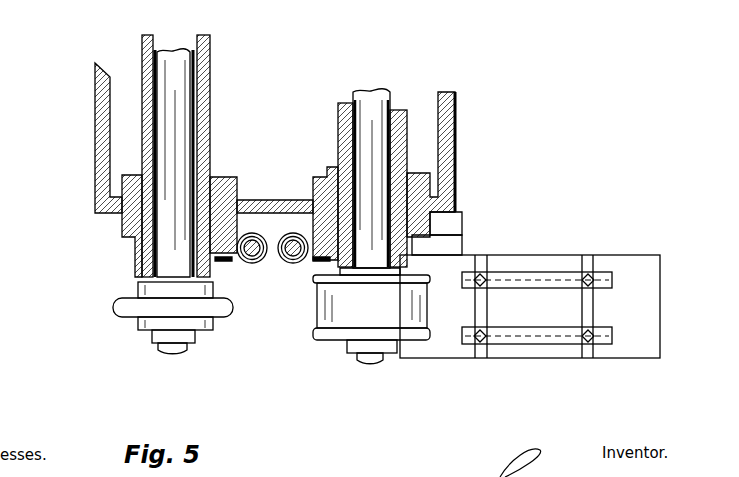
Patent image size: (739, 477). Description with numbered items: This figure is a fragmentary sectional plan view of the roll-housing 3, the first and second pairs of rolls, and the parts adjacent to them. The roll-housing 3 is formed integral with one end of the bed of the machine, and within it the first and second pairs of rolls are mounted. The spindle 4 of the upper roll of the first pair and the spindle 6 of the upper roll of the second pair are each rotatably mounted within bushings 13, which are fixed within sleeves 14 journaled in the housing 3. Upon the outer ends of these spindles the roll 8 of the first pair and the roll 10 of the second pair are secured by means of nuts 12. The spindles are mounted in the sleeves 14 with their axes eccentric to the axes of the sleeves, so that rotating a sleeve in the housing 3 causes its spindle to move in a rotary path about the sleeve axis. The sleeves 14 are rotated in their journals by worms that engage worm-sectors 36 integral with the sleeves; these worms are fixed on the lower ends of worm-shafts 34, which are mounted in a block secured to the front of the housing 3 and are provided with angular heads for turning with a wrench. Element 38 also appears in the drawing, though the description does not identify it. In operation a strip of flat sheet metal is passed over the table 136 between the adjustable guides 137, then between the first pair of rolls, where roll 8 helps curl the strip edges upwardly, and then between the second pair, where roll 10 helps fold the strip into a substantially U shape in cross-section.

The roll-housing 3 is at (95, 115).
The spindle 4 is at (370, 97).
The spindle 6 is at (183, 90).
The roll 8 is at (333, 338).
The roll 10 is at (117, 310).
The nut 12 is at (158, 342).
The bushing 13 is at (157, 219).
The sleeve 14 is at (212, 67).
The worm-shaft 34 is at (287, 240).
The worm-sector 36 is at (238, 267).
The core 38 is at (258, 262).
The table 136 is at (653, 310).
The adjustable guide 137 is at (555, 273).